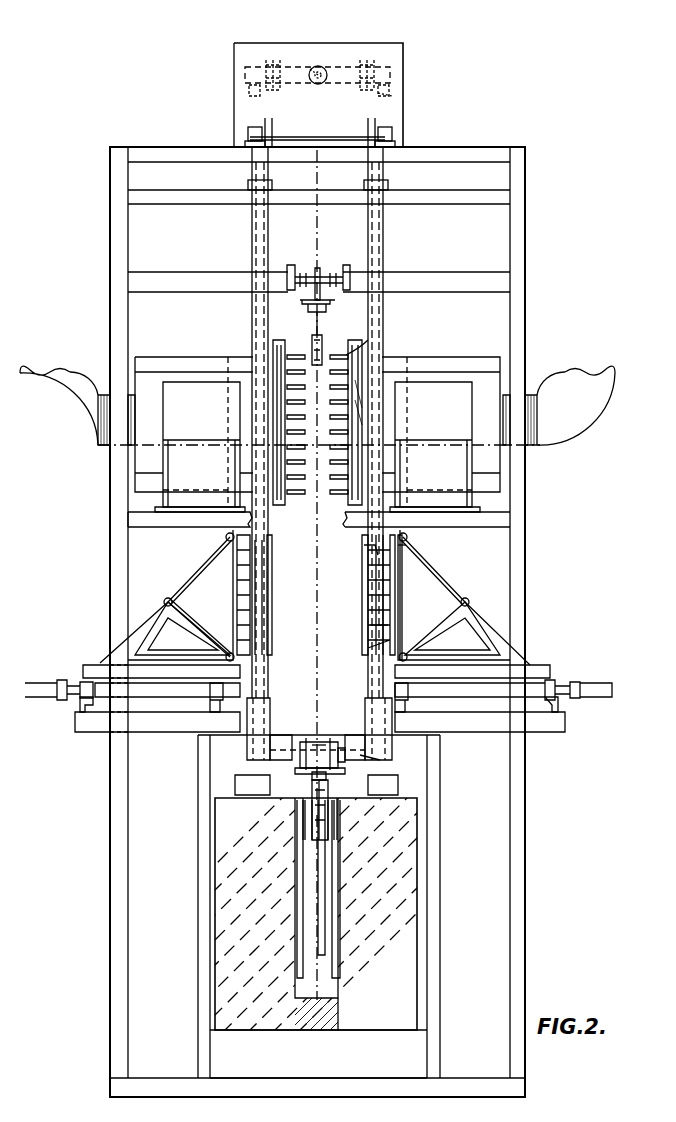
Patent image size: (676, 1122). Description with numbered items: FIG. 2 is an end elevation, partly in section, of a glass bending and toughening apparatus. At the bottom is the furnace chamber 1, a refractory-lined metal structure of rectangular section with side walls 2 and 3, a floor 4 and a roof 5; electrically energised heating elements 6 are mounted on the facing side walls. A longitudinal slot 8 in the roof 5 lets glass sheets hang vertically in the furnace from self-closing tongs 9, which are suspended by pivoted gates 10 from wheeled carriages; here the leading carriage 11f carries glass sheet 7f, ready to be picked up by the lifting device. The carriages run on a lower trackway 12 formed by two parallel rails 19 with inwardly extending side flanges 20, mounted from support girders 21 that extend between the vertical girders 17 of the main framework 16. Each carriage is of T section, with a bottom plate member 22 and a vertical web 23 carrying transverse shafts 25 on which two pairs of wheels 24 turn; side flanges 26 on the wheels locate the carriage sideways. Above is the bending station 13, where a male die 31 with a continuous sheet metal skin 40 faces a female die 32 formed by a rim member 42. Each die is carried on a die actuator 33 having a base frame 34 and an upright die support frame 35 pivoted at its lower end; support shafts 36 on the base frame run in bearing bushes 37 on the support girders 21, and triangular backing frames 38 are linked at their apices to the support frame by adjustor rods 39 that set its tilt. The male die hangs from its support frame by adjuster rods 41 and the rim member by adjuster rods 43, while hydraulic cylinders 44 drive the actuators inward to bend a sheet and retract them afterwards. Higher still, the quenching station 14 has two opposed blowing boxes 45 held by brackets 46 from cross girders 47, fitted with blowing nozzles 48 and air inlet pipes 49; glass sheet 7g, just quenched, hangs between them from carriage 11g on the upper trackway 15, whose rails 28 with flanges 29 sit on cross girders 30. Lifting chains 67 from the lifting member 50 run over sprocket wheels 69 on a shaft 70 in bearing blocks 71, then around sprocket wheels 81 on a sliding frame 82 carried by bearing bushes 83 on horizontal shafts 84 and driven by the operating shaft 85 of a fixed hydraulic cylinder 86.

The furnace chamber 1 is at (408, 905).
The side wall 2 is at (395, 972).
The side wall 3 is at (225, 933).
The floor 4 is at (315, 1028).
The roof 5 is at (405, 818).
The heating elements 6 is at (298, 880).
The glass sheet 7f is at (320, 942).
The glass sheet 7g is at (346, 355).
The longitudinal slot 8 is at (310, 815).
The self-closing tongs 9 is at (310, 832).
The pivoted gates 10 is at (310, 808).
The carriage 11f is at (326, 800).
The carriage 11g is at (322, 261).
The lower trackway 12 is at (392, 748).
The bending station 13 is at (412, 559).
The quenching station 14 is at (364, 411).
The upper trackway 15 is at (350, 282).
The main framework 16 is at (110, 252).
The vertical girders 17 is at (317, 622).
The rails 19 is at (270, 760).
The side flanges 20 is at (238, 780).
The support girders 21 is at (92, 725).
The bottom plate member 22 is at (312, 775).
The vertical web 23 is at (330, 742).
The wheels 24 is at (312, 265).
The transverse shafts 25 is at (345, 752).
The side flanges 26 is at (318, 742).
The rails 28 is at (303, 270).
The flanges 29 is at (300, 302).
The cross girders 30 is at (221, 282).
The male die 31 is at (271, 558).
The female die 32 is at (365, 568).
The die actuator 33 is at (91, 660).
The base frame 34 is at (100, 665).
The die support frame 35 is at (228, 594).
The support shafts 36 is at (178, 690).
The bearing bushes 37 is at (82, 704).
The triangular backing frames 38 is at (165, 608).
The adjustor rod 39 is at (222, 552).
The sheet metal skin 40 is at (274, 606).
The adjuster rods 41 is at (240, 606).
The rim member 42 is at (372, 598).
The adjuster rods 43 is at (378, 620).
The hydraulic cylinder 44 is at (45, 690).
The blowing boxes 45 is at (280, 448).
The brackets 46 is at (196, 390).
The cross girders 47 is at (150, 515).
The blowing nozzles 48 is at (276, 342).
The air inlet pipes 49 is at (68, 430).
The lifting member 50 is at (372, 770).
The lifting chains 67 is at (268, 625).
The sprocket wheels 69 is at (269, 130).
The shaft 70 is at (320, 137).
The bearing blocks 71 is at (252, 132).
The sprocket wheels 81 is at (270, 60).
The sliding frame 82 is at (392, 78).
The bearing bushes 83 is at (395, 93).
The horizontal shafts 84 is at (392, 100).
The operating shaft 85 is at (310, 68).
The hydraulic cylinder 86 is at (320, 66).